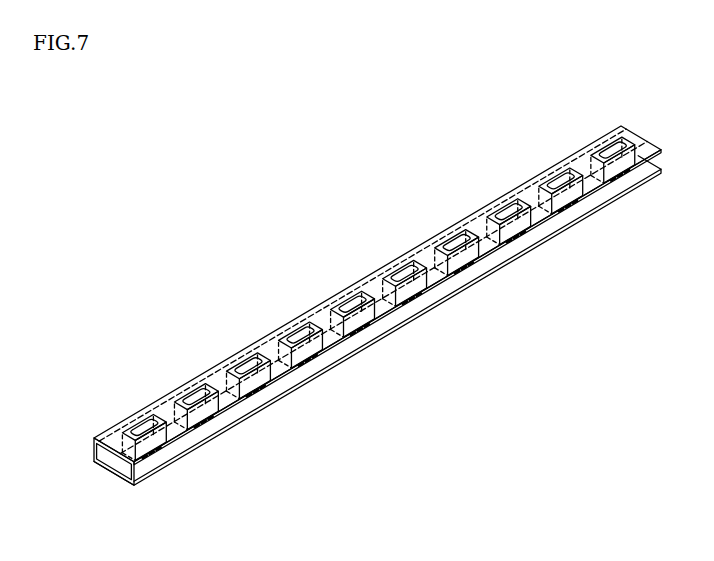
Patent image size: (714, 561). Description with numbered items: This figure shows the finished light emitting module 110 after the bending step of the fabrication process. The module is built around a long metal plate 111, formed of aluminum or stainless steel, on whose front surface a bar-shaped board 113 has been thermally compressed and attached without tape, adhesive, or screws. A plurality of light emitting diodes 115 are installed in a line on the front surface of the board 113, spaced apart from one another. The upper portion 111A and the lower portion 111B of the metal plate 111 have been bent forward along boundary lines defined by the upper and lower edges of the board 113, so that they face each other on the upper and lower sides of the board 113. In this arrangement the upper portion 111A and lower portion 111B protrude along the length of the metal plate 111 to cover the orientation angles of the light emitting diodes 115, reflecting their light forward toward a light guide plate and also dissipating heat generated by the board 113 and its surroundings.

The light emitting module 110 is at (88, 255).
The metal plate 111 is at (451, 406).
The upper portion 111A is at (351, 340).
The lower portion 111B is at (362, 352).
The board 113 is at (108, 465).
The light emitting diodes 115 is at (163, 424).